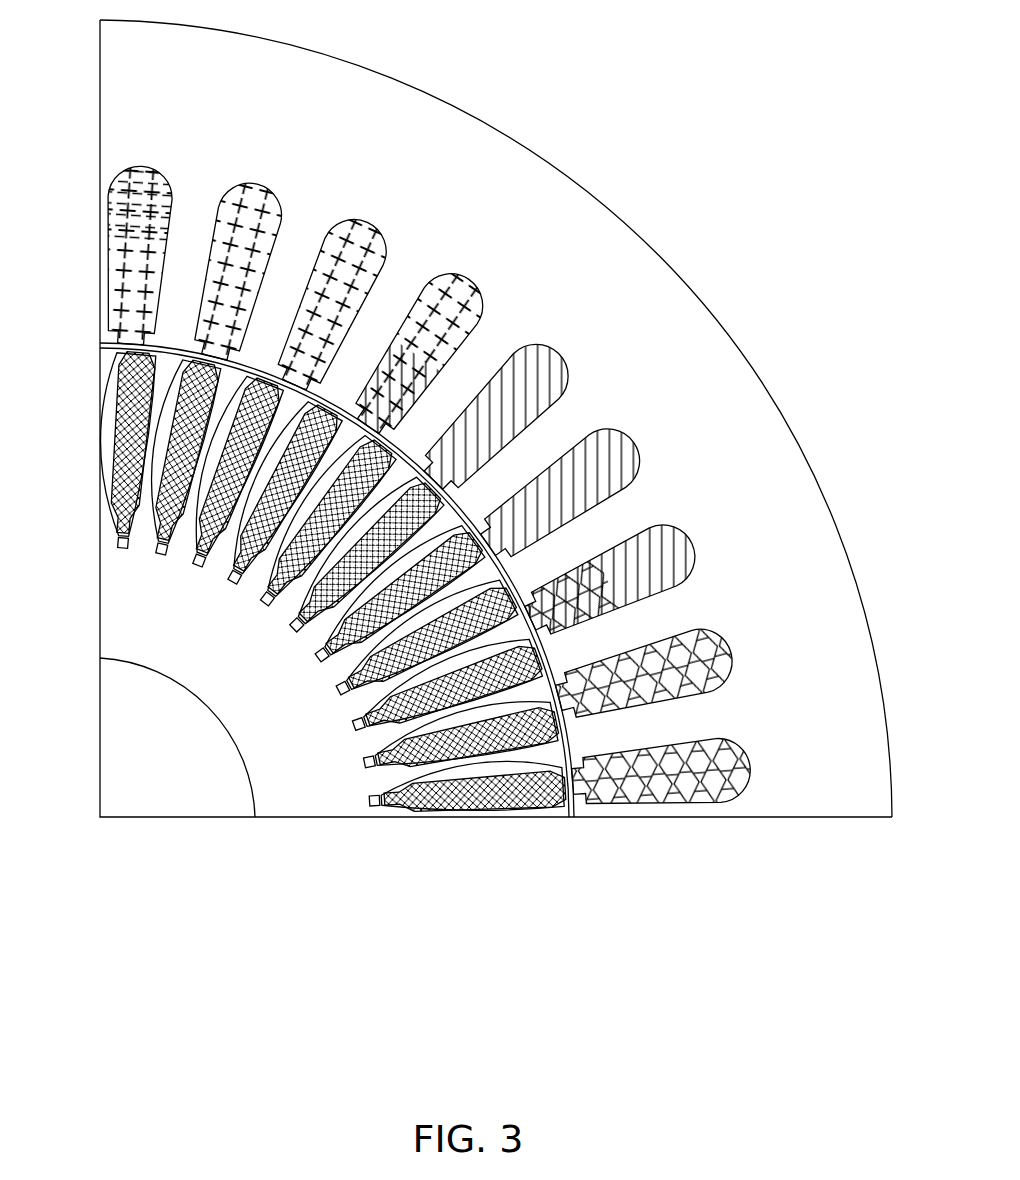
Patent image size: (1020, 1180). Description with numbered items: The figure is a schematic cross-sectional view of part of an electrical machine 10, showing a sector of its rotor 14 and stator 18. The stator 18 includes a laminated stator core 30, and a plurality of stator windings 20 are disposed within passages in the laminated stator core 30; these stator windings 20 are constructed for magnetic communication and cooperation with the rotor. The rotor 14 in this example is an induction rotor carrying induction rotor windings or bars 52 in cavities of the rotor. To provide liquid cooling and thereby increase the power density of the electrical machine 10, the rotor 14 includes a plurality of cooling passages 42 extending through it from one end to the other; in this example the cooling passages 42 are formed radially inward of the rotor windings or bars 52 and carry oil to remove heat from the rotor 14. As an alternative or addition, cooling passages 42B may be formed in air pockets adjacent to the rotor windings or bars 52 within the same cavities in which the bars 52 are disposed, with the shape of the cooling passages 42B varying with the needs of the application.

The electrical machine 10 is at (770, 68).
The rotor 14 is at (270, 820).
The stator 18 is at (853, 464).
The stator windings 20 is at (347, 226).
The laminated stator core 30 is at (437, 96).
The cooling passages 42 is at (197, 568).
The cooling passages 42B is at (106, 442).
The rotor windings or bars 52 is at (118, 412).